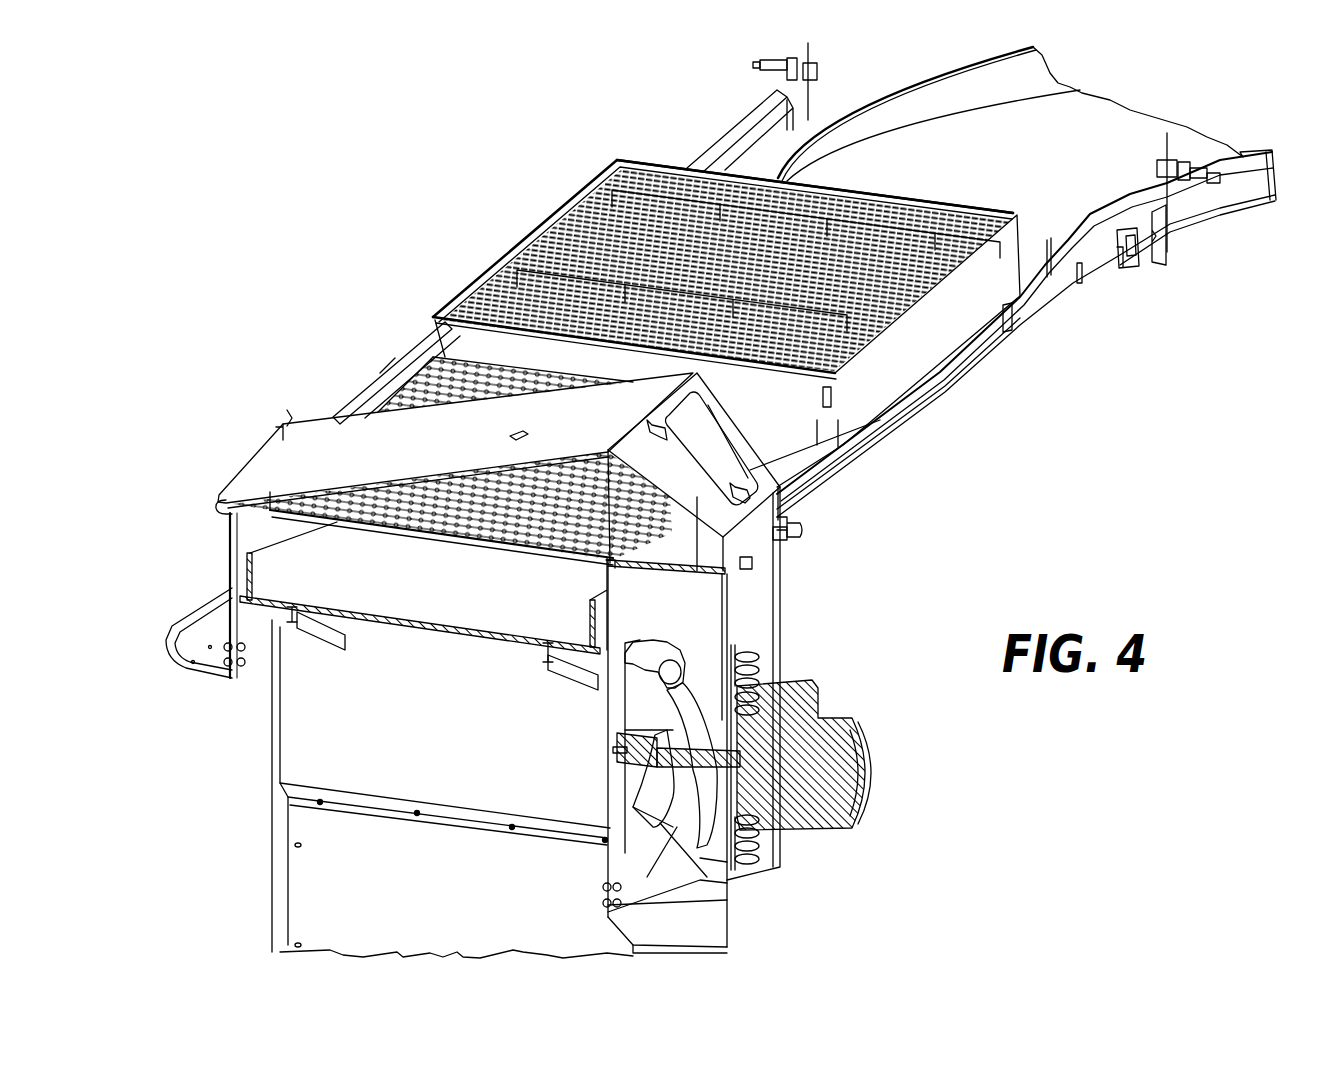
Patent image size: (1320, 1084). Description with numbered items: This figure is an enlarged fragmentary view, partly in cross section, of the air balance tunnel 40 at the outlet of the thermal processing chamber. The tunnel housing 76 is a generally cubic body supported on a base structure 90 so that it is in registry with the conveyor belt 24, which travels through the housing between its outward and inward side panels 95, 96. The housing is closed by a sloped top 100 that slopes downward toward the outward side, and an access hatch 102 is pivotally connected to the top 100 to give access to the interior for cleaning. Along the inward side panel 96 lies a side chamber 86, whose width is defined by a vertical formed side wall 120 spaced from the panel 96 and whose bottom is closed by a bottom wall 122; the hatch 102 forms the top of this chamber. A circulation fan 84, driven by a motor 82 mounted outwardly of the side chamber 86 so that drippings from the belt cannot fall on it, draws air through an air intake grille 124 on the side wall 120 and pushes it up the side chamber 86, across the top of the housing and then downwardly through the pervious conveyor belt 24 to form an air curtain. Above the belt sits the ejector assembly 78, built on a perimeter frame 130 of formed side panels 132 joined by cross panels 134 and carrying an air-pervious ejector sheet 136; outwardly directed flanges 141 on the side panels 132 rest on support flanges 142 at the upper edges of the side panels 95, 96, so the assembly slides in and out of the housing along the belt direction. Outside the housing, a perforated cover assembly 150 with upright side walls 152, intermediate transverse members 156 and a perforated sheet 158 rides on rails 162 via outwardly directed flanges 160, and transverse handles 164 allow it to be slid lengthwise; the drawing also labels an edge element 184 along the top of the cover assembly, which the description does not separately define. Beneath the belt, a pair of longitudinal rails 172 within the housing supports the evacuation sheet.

The conveyor belt 24 is at (912, 143).
The air balance tunnel 40 is at (248, 442).
The tunnel housing 76 is at (220, 580).
The ejector assembly 78 is at (360, 378).
The motor 82 is at (875, 750).
The circulation fan 84 is at (685, 850).
The side chamber 86 is at (702, 877).
The base structure 90 is at (705, 950).
The outward side panel 95 is at (243, 537).
The inward side panel 96 is at (675, 627).
The sloped top 100 is at (350, 460).
The access hatch 102 is at (733, 454).
The side wall 120 is at (770, 566).
The bottom wall 122 is at (675, 893).
The air intake grille 124 is at (745, 825).
The perimeter frame 130 is at (413, 340).
The side panels 132 is at (377, 403).
The cross panels 134 is at (490, 335).
The ejector sheet 136 is at (470, 367).
The outwardly directed flanges 141 is at (387, 367).
The support flanges 142 is at (220, 507).
The perforated cover assembly 150 is at (562, 192).
The side walls 152 is at (957, 315).
The intermediate transverse members 156 is at (590, 203).
The perforated cover sheet 158 is at (563, 230).
The outwardly directed flanges 160 is at (1030, 307).
The rails 162 is at (1107, 267).
The transverse handles 164 is at (675, 192).
The longitudinal rails 172 is at (310, 643).
The top rim 184 is at (628, 163).